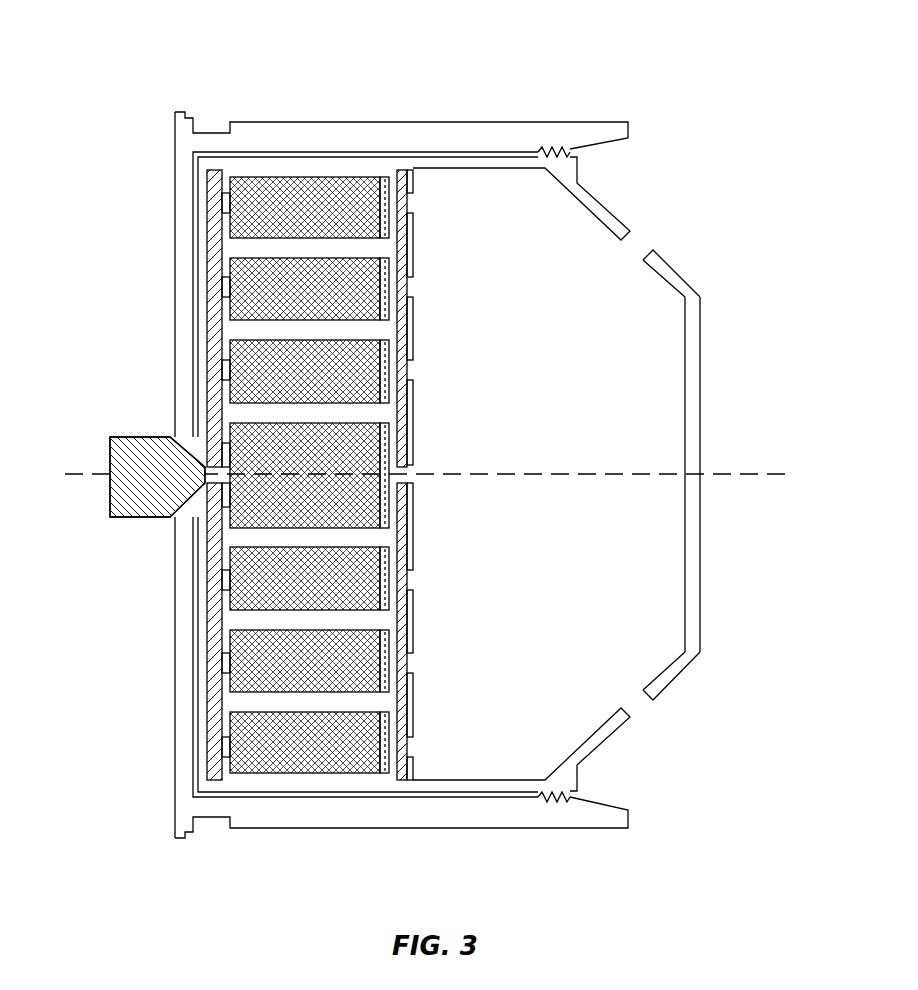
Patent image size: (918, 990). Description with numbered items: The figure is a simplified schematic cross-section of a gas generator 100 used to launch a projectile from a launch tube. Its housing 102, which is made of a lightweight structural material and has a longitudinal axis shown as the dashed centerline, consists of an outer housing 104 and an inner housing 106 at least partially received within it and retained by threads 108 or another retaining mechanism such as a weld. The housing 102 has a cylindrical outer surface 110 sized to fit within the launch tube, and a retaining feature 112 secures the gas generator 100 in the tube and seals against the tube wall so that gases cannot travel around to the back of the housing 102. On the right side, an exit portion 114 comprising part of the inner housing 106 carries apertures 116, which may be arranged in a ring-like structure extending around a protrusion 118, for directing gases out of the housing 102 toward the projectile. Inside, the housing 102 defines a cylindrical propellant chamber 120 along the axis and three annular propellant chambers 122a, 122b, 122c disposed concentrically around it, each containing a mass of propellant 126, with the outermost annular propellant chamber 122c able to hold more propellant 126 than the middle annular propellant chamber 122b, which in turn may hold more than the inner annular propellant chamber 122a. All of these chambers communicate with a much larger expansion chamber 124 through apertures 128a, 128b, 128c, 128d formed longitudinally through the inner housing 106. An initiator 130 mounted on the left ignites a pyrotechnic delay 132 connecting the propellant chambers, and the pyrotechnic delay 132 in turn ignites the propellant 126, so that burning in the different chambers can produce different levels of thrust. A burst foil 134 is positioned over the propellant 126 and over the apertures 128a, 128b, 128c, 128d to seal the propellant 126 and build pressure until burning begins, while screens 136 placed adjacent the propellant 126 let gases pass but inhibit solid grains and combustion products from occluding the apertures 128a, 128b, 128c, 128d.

The gas generator 100 is at (118, 60).
The housing 102 is at (157, 162).
The outer housing 104 is at (183, 218).
The inner housing 106 is at (307, 165).
The threads 108 is at (553, 150).
The cylindrical outer surface 110 is at (512, 830).
The retaining feature 112 is at (187, 110).
The exit portion 114 is at (742, 337).
The apertures 116 is at (638, 245).
The protrusion 118 is at (702, 612).
The cylindrical propellant chamber 120 is at (242, 510).
The inner annular propellant chamber 122a is at (237, 600).
The middle annular propellant chamber 122b is at (237, 685).
The outermost annular propellant chamber 122c is at (237, 765).
The expansion chamber 124 is at (647, 437).
The propellant 126 is at (283, 683).
The apertures of the inner annular propellant chamber 128a is at (413, 582).
The apertures of the middle annular propellant chamber 128b is at (413, 665).
The apertures of the outer annular propellant chamber 128c is at (413, 747).
The apertures of the cylindrical propellant chamber 128d is at (413, 480).
The initiator 130 is at (128, 447).
The pyrotechnic delay 132 is at (213, 392).
The burst foil 134 is at (405, 203).
The screens 136 is at (383, 177).